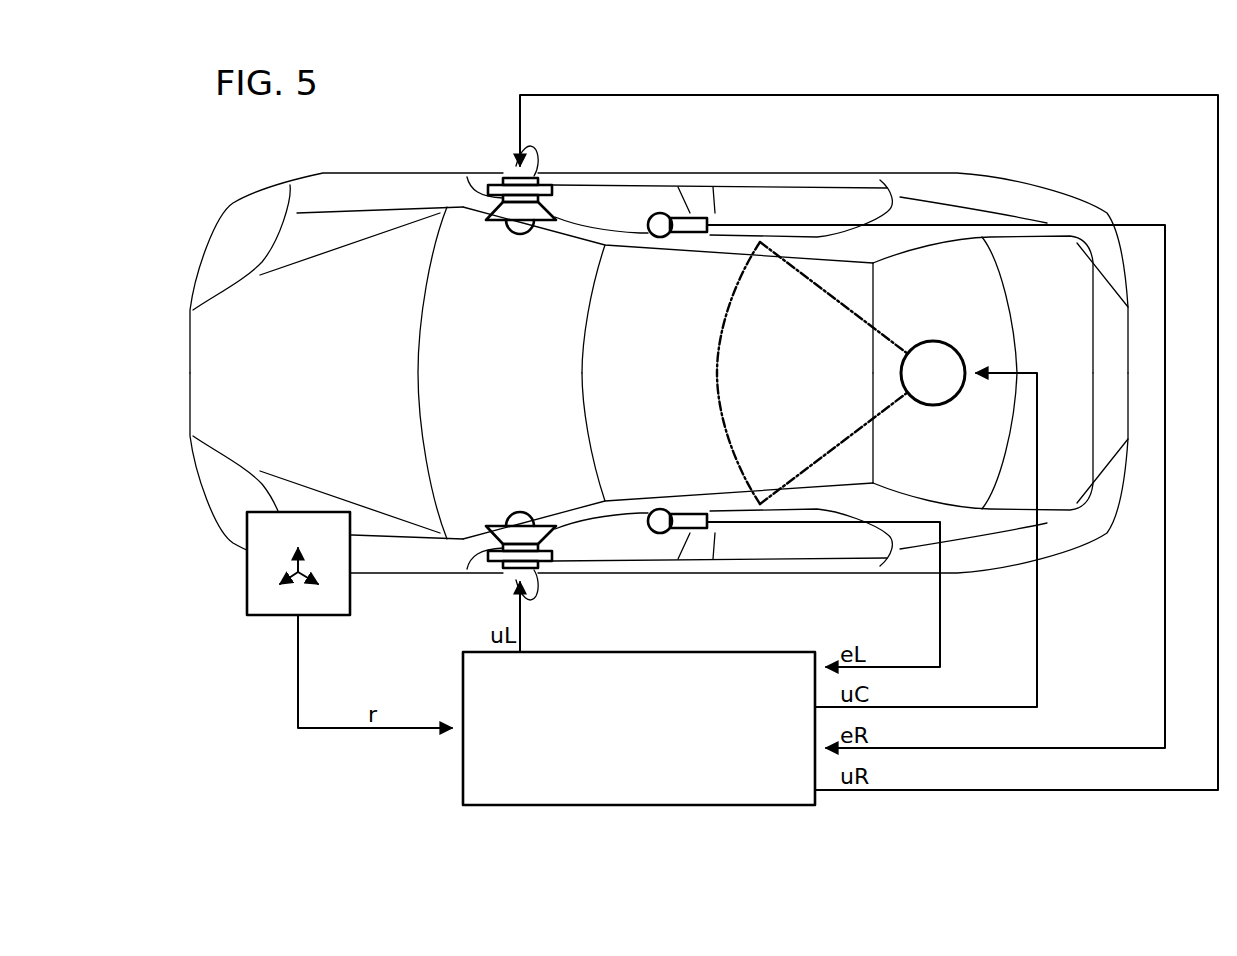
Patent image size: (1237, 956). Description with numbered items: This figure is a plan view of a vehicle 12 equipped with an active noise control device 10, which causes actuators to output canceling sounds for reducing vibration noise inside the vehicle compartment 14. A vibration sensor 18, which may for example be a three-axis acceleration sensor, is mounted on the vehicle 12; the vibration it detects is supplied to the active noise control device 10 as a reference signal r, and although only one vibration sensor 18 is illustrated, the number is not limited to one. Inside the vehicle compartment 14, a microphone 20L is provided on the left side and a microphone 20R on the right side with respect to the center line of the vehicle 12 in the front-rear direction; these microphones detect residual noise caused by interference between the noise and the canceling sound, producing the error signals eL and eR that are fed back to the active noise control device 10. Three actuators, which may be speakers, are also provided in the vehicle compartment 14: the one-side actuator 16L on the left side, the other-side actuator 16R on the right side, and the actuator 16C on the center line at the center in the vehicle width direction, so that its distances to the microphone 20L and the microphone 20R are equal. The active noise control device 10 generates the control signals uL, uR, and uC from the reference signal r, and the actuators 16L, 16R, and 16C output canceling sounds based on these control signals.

The active noise control device 10 is at (664, 651).
The vehicle 12 is at (1076, 181).
The vehicle compartment 14 is at (467, 257).
The other-side actuator 16R is at (515, 228).
The one-side actuator 16L is at (520, 518).
The actuator 16C is at (942, 405).
The vibration sensor 18 is at (247, 572).
The microphone 20R is at (665, 238).
The microphone 20L is at (663, 508).